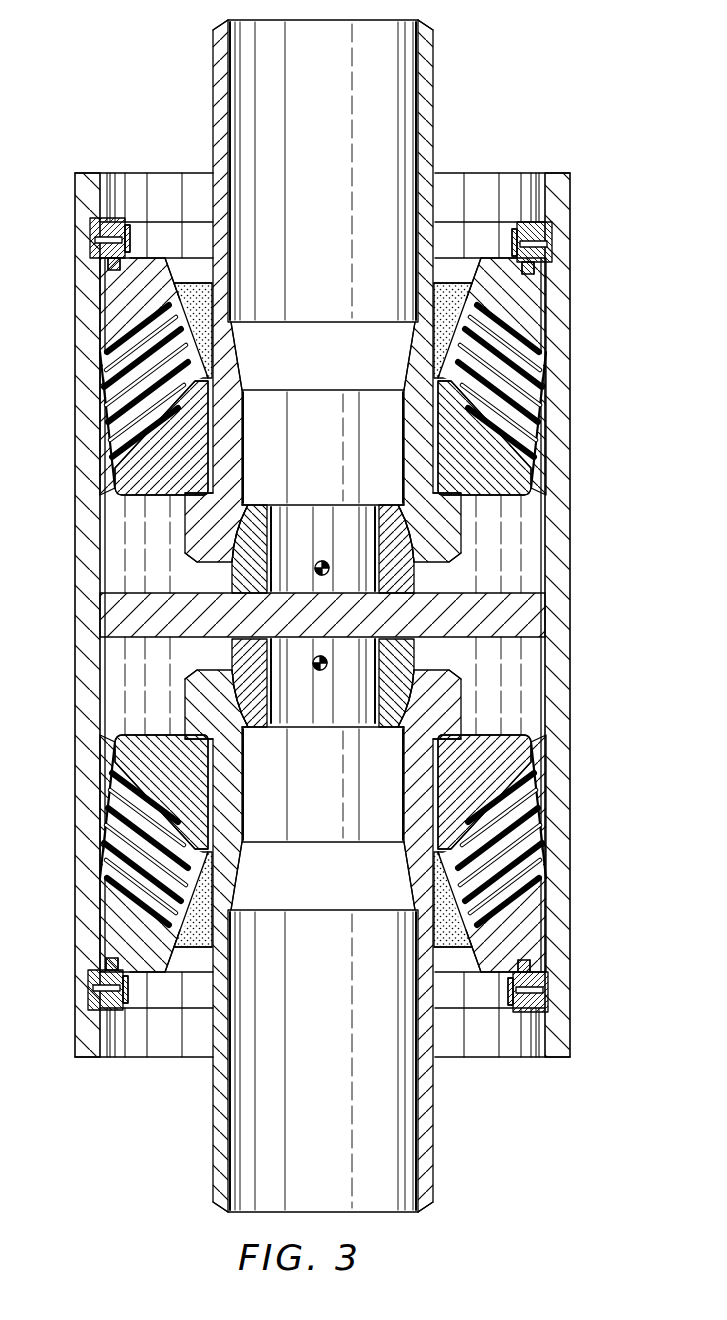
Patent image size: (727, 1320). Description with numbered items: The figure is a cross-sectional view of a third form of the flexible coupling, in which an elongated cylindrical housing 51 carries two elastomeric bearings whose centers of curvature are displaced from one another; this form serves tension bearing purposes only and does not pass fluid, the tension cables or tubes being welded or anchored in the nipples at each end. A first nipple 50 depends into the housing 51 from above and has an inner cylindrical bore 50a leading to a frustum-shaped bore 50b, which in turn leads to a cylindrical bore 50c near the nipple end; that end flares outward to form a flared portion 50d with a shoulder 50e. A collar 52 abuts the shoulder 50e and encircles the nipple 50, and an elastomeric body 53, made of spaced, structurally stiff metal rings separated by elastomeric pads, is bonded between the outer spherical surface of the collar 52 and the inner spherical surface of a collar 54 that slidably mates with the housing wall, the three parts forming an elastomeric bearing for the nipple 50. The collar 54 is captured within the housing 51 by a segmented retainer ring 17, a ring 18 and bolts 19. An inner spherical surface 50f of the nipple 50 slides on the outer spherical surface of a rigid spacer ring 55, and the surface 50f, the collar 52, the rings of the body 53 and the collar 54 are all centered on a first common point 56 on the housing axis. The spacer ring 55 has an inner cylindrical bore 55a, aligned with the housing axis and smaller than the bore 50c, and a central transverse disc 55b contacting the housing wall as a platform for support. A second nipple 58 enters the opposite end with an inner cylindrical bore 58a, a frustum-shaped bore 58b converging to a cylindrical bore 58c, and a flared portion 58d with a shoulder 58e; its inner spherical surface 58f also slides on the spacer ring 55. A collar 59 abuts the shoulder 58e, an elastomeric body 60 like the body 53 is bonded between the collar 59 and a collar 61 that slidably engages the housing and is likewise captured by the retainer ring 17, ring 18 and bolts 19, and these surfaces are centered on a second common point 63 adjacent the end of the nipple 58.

The segmented retainer ring 17 is at (92, 232).
The ring 18 is at (118, 222).
The bolts 19 is at (129, 240).
The first nipple 50 is at (223, 195).
The inner cylindrical bore 50a is at (236, 122).
The inner bore having the shape of a frustum 50b is at (243, 368).
The cylindrical bore 50c is at (245, 452).
The flared portion 50d is at (192, 548).
The shoulder 50e is at (192, 512).
The inner spherical surface 50f is at (238, 530).
The housing 51 is at (85, 481).
The collar 52 is at (155, 465).
The elastomeric body 53 is at (105, 405).
The collar 54 is at (125, 300).
The rigid spacer ring 55 is at (270, 532).
The inner cylindrical bore 55a is at (268, 560).
The central transverse disc 55b is at (188, 610).
The first common point 56 is at (327, 563).
The second nipple 58 is at (228, 822).
The inner cylindrical bore 58a is at (232, 1092).
The frustum shaped bore 58b is at (235, 893).
The cylindrical bore 58c is at (242, 788).
The flared portion 58d is at (197, 686).
The shoulder 58e is at (190, 732).
The inner spherical surface 58f is at (252, 727).
The collar 59 is at (148, 752).
The elastomeric body 60 is at (100, 812).
The collar 61 is at (520, 938).
The second common point 63 is at (325, 669).